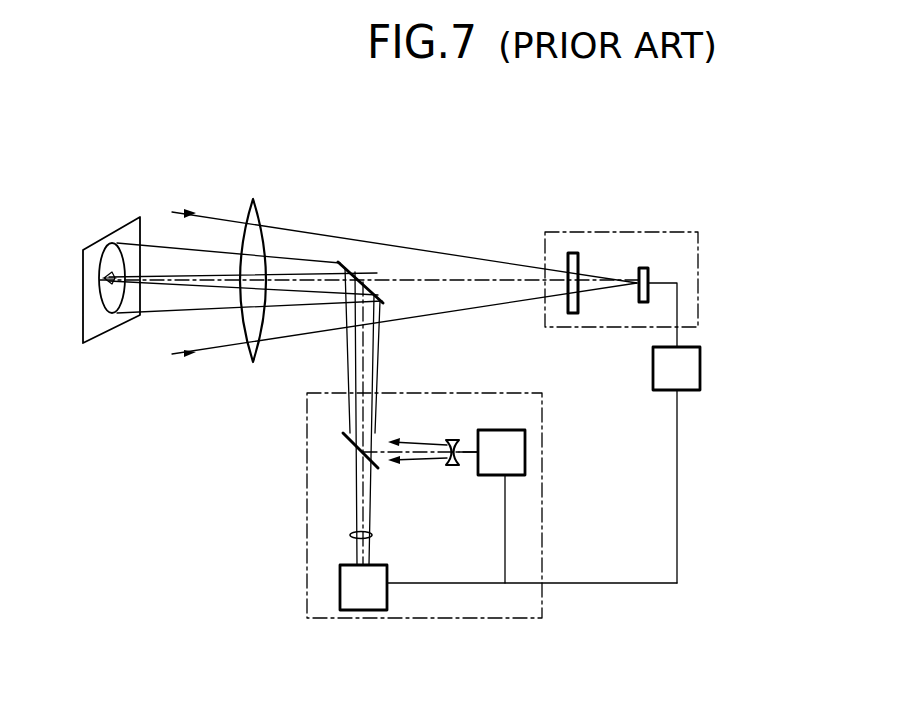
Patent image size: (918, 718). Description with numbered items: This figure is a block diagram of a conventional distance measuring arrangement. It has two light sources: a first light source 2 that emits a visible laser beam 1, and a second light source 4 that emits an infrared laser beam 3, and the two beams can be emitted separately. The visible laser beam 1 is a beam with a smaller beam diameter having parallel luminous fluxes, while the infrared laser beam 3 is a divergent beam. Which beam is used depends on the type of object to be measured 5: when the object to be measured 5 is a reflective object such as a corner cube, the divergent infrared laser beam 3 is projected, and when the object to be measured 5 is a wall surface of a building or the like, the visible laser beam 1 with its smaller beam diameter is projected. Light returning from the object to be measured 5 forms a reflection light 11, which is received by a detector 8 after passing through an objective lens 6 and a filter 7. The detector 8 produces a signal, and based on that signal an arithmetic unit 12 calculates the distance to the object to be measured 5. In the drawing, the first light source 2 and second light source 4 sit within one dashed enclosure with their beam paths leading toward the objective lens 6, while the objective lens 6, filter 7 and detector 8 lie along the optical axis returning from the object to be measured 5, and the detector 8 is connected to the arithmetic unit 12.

The visible laser beam 1 is at (356, 502).
The first light source 2 is at (339, 578).
The infrared laser beam 3 is at (425, 441).
The second light source 4 is at (526, 452).
The object to be measured 5 is at (132, 232).
The objective lens 6 is at (261, 211).
The filter 7 is at (578, 261).
The detector 8 is at (650, 272).
The reflection light 11 is at (398, 243).
The arithmetic unit 12 is at (700, 379).